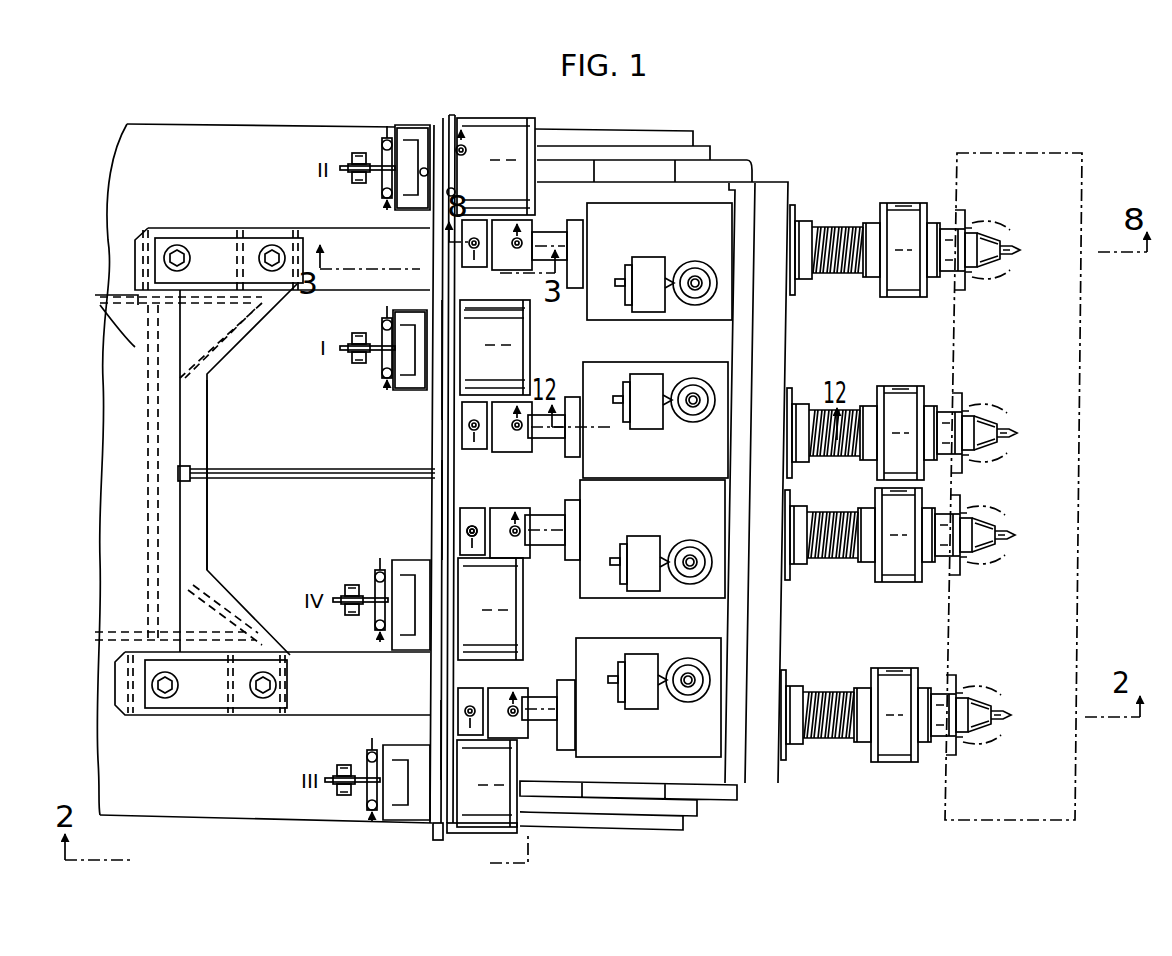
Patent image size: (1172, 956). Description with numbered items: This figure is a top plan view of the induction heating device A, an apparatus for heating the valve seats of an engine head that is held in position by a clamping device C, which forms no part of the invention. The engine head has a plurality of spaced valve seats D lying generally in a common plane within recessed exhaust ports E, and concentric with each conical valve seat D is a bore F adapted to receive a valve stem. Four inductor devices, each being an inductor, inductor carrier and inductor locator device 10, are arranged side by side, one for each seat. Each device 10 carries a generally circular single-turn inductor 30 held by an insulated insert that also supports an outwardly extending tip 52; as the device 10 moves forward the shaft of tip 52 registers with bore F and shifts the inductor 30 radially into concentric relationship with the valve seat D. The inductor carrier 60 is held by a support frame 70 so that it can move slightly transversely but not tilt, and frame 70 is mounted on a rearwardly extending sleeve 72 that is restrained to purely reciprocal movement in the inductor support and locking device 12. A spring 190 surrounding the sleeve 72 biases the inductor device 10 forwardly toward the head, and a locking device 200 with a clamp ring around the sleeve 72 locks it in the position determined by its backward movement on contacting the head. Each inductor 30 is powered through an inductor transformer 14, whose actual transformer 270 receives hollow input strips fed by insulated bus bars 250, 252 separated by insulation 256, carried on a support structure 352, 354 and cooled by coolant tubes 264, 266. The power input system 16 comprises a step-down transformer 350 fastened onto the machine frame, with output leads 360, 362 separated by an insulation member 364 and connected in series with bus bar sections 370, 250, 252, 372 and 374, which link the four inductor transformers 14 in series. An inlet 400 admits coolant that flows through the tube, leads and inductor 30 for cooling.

The step-down transformer 350 is at (100, 276).
The support structure 354 is at (305, 242).
The support structure 352 is at (300, 668).
The output lead 362 is at (303, 468).
The insulation member 364 is at (237, 468).
The output lead 360 is at (283, 481).
The power input system 16 is at (355, 514).
The bus bar section 370 is at (432, 407).
The bus bar section 374 is at (432, 527).
The bus bar section 372 is at (416, 724).
The insulated bus bar 250 is at (428, 229).
The coolant tube 264 is at (396, 293).
The insulation 256 is at (424, 168).
The coolant tube 266 is at (468, 128).
The transformer 270 is at (492, 126).
The inductor transformer 14 is at (518, 133).
The insulated bus bar 252 is at (449, 360).
The inlet 400 is at (476, 516).
The inductor support and locking device 12 is at (704, 200).
The locking device 200 is at (706, 270).
The sleeve 72 is at (838, 228).
The spring 190 is at (838, 273).
The support frame 70 is at (888, 201).
The inductor, inductor carrier and inductor locator device 10 is at (906, 202).
The carrier 60 is at (950, 268).
The inductor 30 is at (972, 270).
The tip 52 is at (1018, 258).
The induction heating device A is at (862, 160).
The clamping device C is at (1086, 318).
The recessed exhaust port E is at (966, 206).
The valve seat D is at (976, 233).
The bore F is at (1020, 246).